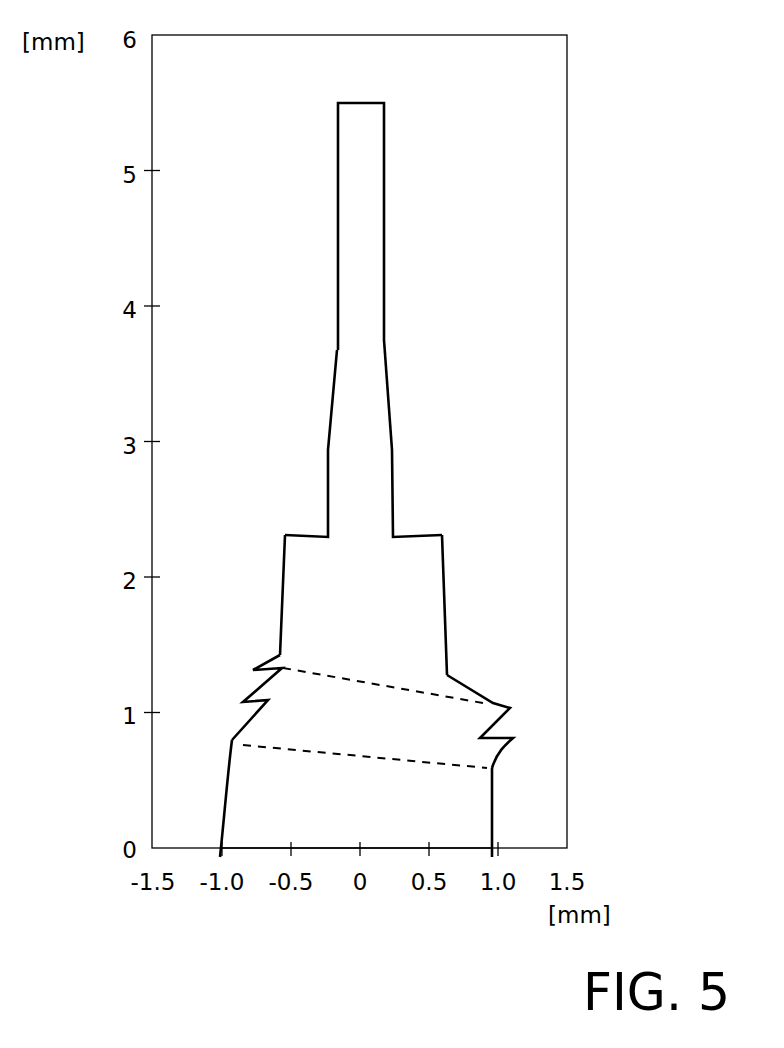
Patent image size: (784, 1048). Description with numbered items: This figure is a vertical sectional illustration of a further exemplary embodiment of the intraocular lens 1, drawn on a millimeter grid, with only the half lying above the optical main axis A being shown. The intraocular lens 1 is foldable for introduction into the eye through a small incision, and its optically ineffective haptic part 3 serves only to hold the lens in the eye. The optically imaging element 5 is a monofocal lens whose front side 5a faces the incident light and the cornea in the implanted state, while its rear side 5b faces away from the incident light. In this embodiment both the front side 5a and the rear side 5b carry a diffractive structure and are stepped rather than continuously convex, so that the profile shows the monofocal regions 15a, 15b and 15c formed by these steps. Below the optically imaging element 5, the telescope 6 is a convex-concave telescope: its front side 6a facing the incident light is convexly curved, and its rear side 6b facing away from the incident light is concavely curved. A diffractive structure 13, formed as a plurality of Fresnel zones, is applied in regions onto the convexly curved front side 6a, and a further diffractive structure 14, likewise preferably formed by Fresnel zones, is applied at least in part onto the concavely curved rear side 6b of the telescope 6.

The intraocular lens 1 is at (434, 200).
The haptic part 3 is at (410, 240).
The optically imaging element 5 is at (446, 440).
The front side 5a is at (302, 489).
The rear side 5b is at (429, 512).
The telescope 6 is at (552, 762).
The front side 6a is at (203, 802).
The rear side 6b is at (517, 781).
The diffractive structure 13 is at (219, 697).
The further diffractive structure 14 is at (525, 723).
The monofocal region 15a is at (367, 408).
The monofocal region 15b is at (427, 593).
The monofocal region 15c is at (458, 813).
The optical main axis A is at (252, 848).